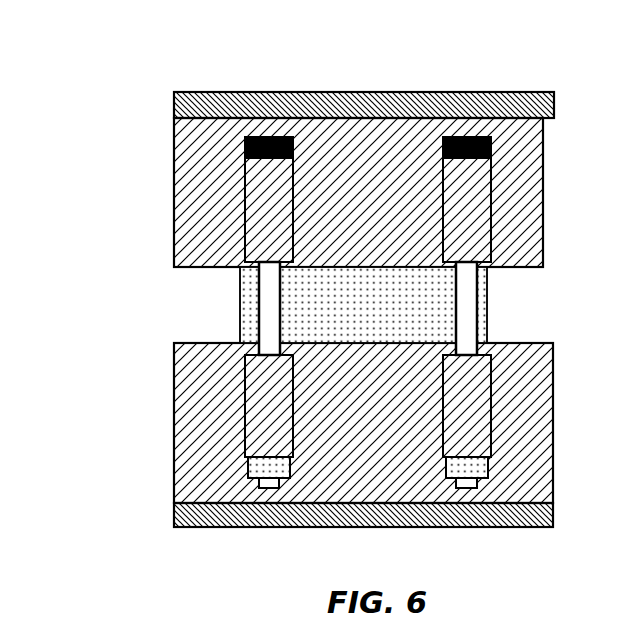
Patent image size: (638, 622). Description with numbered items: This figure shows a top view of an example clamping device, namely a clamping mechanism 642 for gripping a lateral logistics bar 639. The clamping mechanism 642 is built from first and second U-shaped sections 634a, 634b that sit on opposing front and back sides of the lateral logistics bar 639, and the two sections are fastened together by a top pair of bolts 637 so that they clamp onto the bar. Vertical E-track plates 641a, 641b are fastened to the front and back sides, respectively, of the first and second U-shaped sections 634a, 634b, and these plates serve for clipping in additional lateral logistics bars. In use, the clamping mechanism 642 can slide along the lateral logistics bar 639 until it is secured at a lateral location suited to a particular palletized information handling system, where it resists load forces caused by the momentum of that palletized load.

The vertical E-track plate 641a is at (292, 92).
The vertical E-track plate 641b is at (463, 527).
The first U-shaped section 634a is at (174, 192).
The second U-shaped section 634b is at (174, 423).
The clamping mechanism 642 is at (172, 118).
The top pair of bolts 637 is at (252, 314).
The lateral logistics bar 639 is at (240, 327).